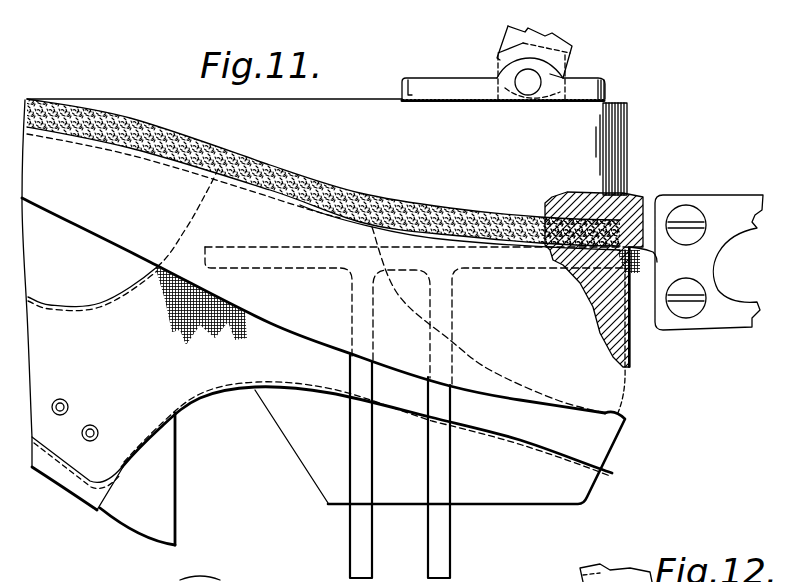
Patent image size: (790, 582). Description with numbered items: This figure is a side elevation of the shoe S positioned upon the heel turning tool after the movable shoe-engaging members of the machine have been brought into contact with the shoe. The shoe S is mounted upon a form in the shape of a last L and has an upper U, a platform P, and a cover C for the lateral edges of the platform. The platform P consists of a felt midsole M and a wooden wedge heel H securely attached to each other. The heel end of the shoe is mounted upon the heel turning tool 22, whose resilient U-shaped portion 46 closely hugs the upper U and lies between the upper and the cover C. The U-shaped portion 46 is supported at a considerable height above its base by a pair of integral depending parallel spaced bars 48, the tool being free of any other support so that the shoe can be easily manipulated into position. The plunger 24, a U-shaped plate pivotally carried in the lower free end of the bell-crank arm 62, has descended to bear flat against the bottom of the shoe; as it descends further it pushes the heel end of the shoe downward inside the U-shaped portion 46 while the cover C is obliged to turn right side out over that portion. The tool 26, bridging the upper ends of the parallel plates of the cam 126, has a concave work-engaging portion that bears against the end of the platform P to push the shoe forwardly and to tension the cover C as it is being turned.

In FIG. 11, the felt midsole M is at (58, 115).
In FIG. 11, the platform P is at (123, 107).
In FIG. 11, the shoe S is at (52, 495).
In FIG. 11, the upper U is at (216, 380).
In FIG. 11, the last L is at (179, 508).
In FIG. 11, the wooden wedge heel H is at (607, 130).
In FIG. 11, the cover C is at (295, 337).
In FIG. 11, the heel turning tool 22 is at (470, 530).
In FIG. 11, the plunger 24 is at (442, 80).
In FIG. 11, the tool 26 is at (650, 200).
In FIG. 11, the U-shaped portion 46 is at (268, 247).
In FIG. 11, the depending parallel spaced bars 48 is at (430, 530).
In FIG. 11, the bell-crank arm 62 is at (507, 34).
In FIG. 12, the bell-crank arm 62 is at (603, 566).
In FIG. 11, the cam 126 is at (700, 322).